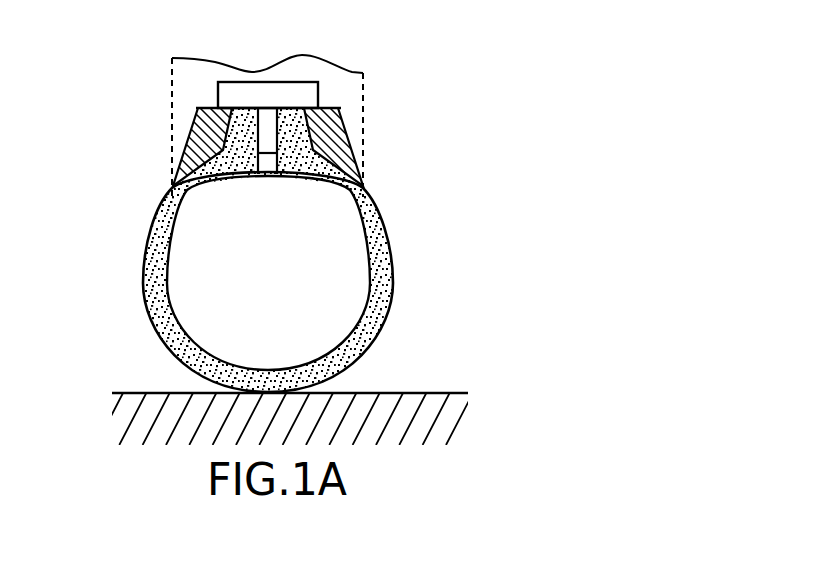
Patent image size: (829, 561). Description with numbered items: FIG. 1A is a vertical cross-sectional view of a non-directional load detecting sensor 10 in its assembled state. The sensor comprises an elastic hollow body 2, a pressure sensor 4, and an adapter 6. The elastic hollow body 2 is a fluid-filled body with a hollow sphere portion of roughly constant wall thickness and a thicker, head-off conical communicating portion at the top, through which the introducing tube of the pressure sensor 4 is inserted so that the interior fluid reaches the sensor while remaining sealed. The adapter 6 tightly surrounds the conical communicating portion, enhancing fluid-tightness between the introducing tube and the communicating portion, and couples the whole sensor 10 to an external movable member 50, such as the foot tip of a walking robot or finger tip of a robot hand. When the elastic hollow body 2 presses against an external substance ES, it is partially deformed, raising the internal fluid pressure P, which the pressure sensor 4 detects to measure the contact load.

The elastic hollow body 2 is at (128, 265).
The pressure sensor 4 is at (263, 81).
The adapter 6 is at (189, 139).
The non-directional load detecting sensor 10 is at (294, 148).
The external movable member 50 is at (359, 93).
The internal fluid pressure P is at (270, 277).
The external substance ES is at (418, 408).